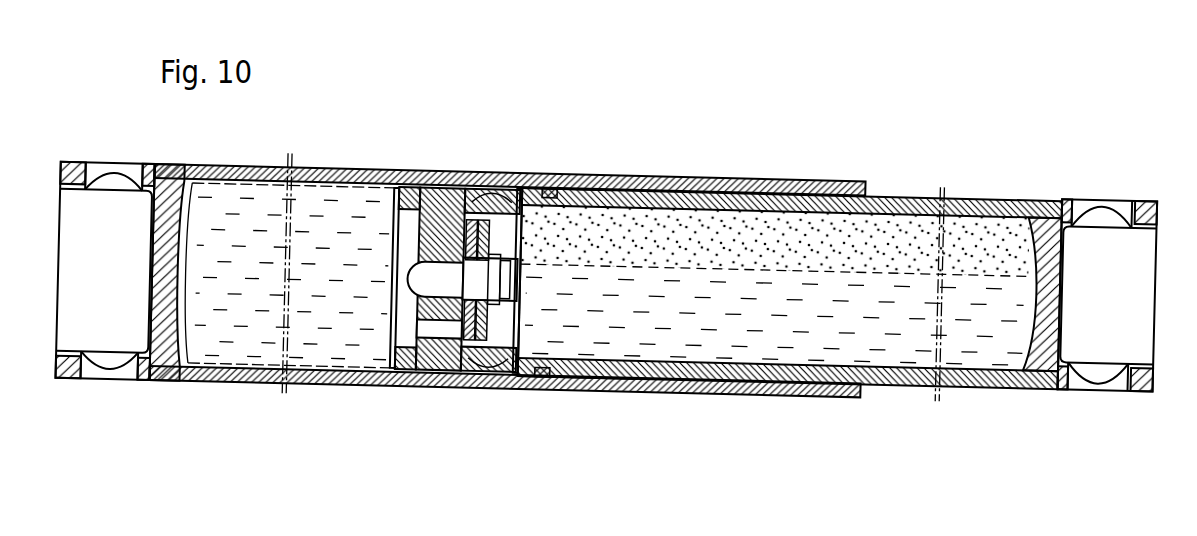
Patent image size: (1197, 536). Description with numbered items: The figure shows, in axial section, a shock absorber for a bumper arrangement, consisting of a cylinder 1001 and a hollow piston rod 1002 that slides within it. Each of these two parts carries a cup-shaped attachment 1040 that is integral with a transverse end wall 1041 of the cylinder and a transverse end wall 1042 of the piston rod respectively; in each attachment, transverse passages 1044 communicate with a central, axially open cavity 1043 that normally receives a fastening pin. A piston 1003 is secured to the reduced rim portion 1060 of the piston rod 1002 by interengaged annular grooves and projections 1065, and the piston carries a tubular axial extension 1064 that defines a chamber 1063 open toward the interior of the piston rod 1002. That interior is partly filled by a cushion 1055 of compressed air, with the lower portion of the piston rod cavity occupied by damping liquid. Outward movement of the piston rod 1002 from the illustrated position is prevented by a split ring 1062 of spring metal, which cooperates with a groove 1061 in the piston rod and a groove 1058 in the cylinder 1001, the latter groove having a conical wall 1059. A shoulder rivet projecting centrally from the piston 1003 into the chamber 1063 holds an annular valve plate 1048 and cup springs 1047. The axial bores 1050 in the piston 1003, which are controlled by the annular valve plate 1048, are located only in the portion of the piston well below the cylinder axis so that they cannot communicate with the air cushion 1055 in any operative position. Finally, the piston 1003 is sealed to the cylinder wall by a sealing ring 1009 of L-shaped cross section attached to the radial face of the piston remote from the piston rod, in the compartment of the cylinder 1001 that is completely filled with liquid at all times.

The cylinder 1001 is at (223, 383).
The hollow piston rod 1002 is at (892, 386).
The piston 1003 is at (435, 190).
The sealing ring 1009 is at (403, 190).
The cup-shaped attachment 1040 is at (92, 160).
The transverse end wall of the cylinder 1041 is at (180, 205).
The transverse end wall of the piston rod 1042 is at (1037, 352).
The central axially open cavity 1043 is at (142, 372).
The transverse passages 1044 is at (122, 190).
The cup springs 1047 is at (470, 195).
The annular valve plate 1048 is at (489, 342).
The axial bores 1050 is at (423, 332).
The cushion of compressed air 1055 is at (887, 230).
The groove in the cylinder 1058 is at (549, 188).
The conical wall 1059 is at (541, 376).
The reduced rim portion 1060 is at (510, 190).
The groove in the piston rod 1061 is at (577, 185).
The split ring 1062 is at (553, 373).
The chamber 1063 is at (480, 362).
The tubular axial extension 1064 is at (521, 210).
The interengaged annular grooves and projections 1065 is at (518, 372).